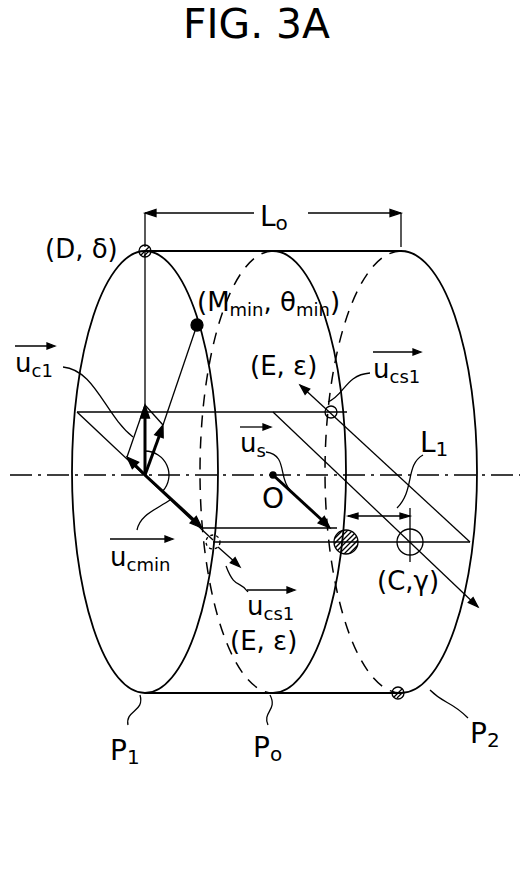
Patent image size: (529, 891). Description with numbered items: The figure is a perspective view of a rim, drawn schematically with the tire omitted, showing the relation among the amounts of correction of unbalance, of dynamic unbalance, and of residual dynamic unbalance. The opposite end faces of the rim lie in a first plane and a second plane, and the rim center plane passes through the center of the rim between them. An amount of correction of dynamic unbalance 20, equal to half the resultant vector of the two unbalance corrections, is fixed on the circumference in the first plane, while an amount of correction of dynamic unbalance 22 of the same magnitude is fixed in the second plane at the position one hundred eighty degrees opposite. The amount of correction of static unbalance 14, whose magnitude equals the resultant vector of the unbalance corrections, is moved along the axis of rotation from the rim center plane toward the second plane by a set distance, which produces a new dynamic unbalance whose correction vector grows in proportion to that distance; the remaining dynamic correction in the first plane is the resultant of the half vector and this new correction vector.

The amount of correction of static unbalance 14 is at (347, 555).
The amount of correction of dynamic unbalance 20 is at (145, 251).
The amount of correction of dynamic unbalance 22 is at (398, 699).